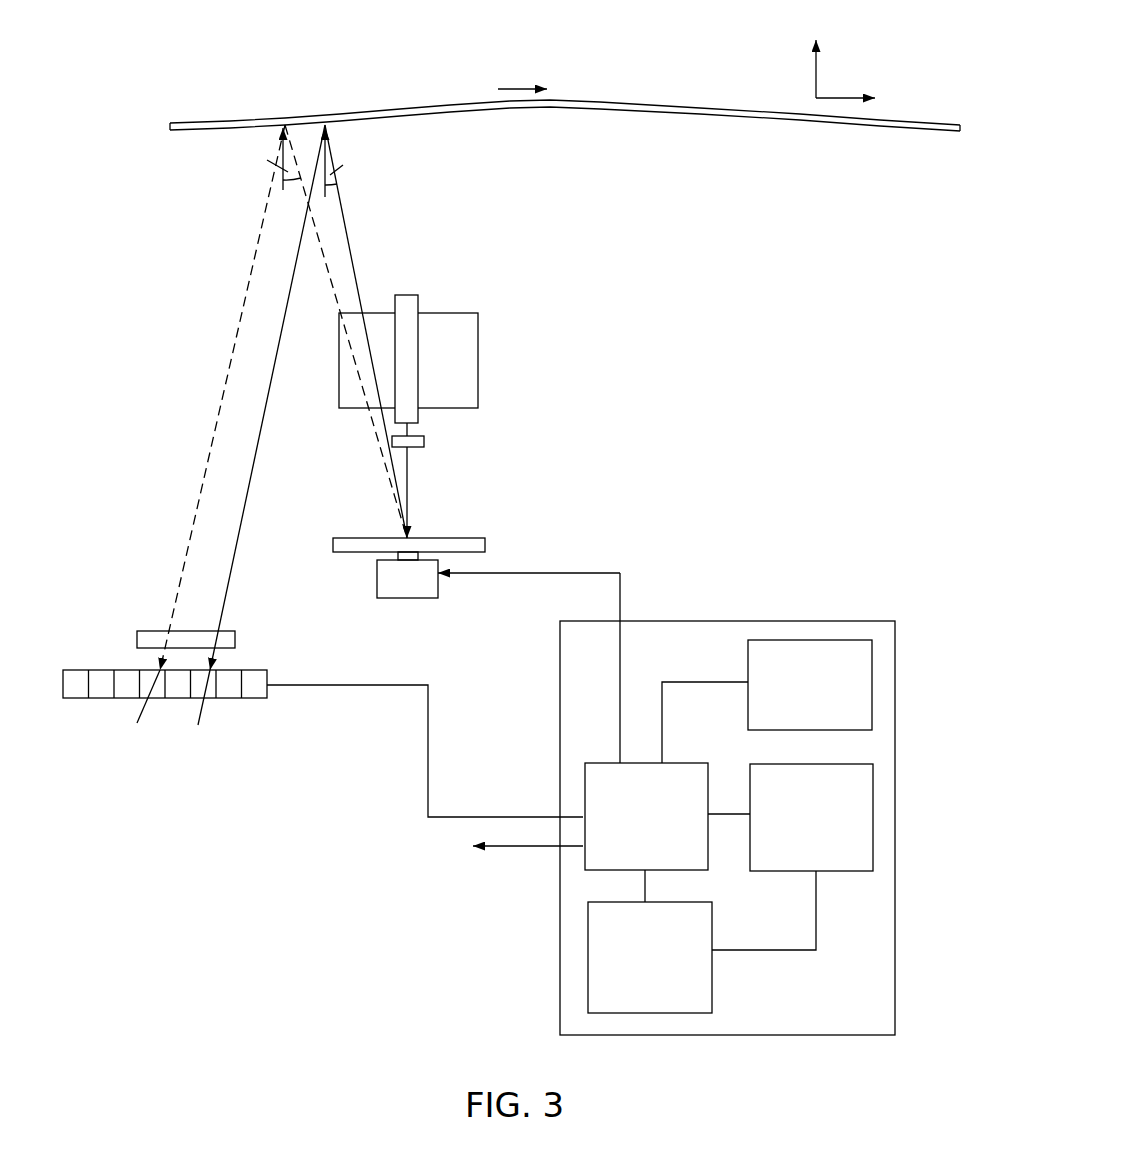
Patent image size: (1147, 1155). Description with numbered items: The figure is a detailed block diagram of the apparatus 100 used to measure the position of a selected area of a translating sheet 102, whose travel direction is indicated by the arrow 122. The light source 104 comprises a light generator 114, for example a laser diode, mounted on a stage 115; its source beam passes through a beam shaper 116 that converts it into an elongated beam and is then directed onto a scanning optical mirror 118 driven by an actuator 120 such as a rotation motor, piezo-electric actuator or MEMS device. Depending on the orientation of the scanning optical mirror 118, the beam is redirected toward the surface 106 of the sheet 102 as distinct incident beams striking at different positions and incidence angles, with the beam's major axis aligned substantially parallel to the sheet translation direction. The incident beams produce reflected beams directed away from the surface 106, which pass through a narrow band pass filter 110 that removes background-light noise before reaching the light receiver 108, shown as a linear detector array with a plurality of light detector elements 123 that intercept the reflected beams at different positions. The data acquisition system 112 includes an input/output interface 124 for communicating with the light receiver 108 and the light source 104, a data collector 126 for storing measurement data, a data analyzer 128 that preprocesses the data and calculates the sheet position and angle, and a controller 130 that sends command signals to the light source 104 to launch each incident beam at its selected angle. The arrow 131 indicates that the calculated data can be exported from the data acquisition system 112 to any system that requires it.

The apparatus 100 is at (363, 745).
The sheet 102 is at (565, 107).
The light source 104 is at (462, 300).
The surface 106 is at (605, 110).
The light receiver 108 is at (172, 677).
The narrow band pass filter 110 is at (152, 631).
The data acquisition system 112 is at (647, 621).
The light generator 114 is at (408, 295).
The stage 115 is at (478, 360).
The beam shaper 116 is at (424, 440).
The scanning optical mirror 118 is at (477, 545).
The actuator 120 is at (410, 590).
The arrow 122 is at (522, 73).
The light detector elements 123 is at (102, 687).
The input/output interface 124 is at (661, 822).
The data collector 126 is at (831, 822).
The data analyzer 128 is at (669, 970).
The controller 130 is at (829, 698).
The arrow 131 is at (508, 847).